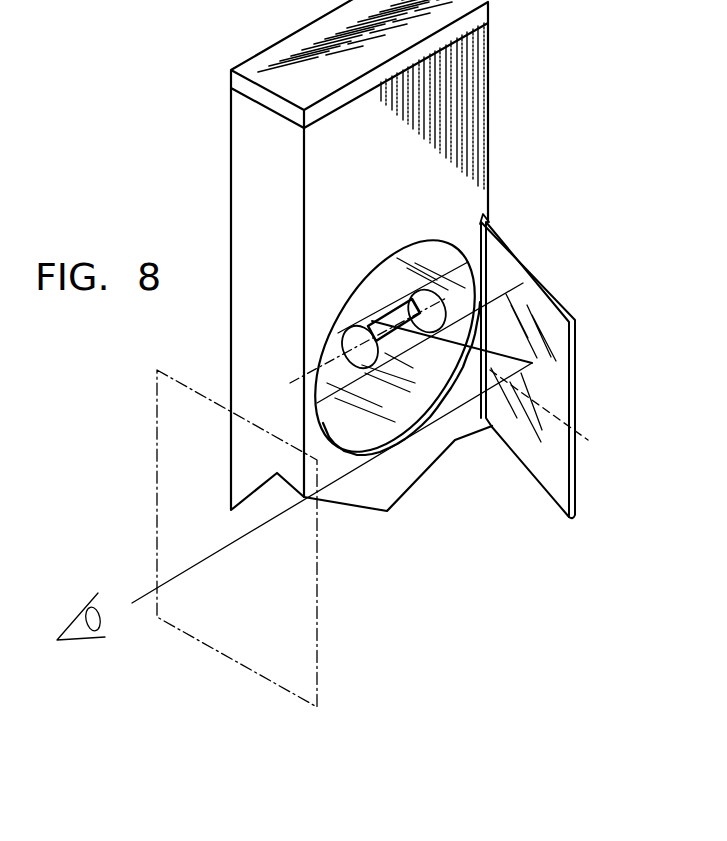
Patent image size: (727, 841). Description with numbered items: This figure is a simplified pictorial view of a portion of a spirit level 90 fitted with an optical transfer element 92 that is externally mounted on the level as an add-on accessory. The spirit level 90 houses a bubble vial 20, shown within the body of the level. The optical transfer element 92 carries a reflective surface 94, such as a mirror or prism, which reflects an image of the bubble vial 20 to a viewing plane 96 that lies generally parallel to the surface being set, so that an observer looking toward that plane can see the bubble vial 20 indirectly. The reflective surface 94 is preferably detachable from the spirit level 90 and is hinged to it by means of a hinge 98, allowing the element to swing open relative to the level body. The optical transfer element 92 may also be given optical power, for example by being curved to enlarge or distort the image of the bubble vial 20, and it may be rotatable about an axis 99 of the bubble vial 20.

The spirit level 90 is at (193, 91).
The bubble vial 20 is at (385, 305).
The optical transfer element 92 is at (568, 289).
The reflective surface 94 is at (524, 283).
The hinge 98 is at (484, 214).
The viewing plane 96 is at (168, 440).
The axis 99 is at (588, 440).